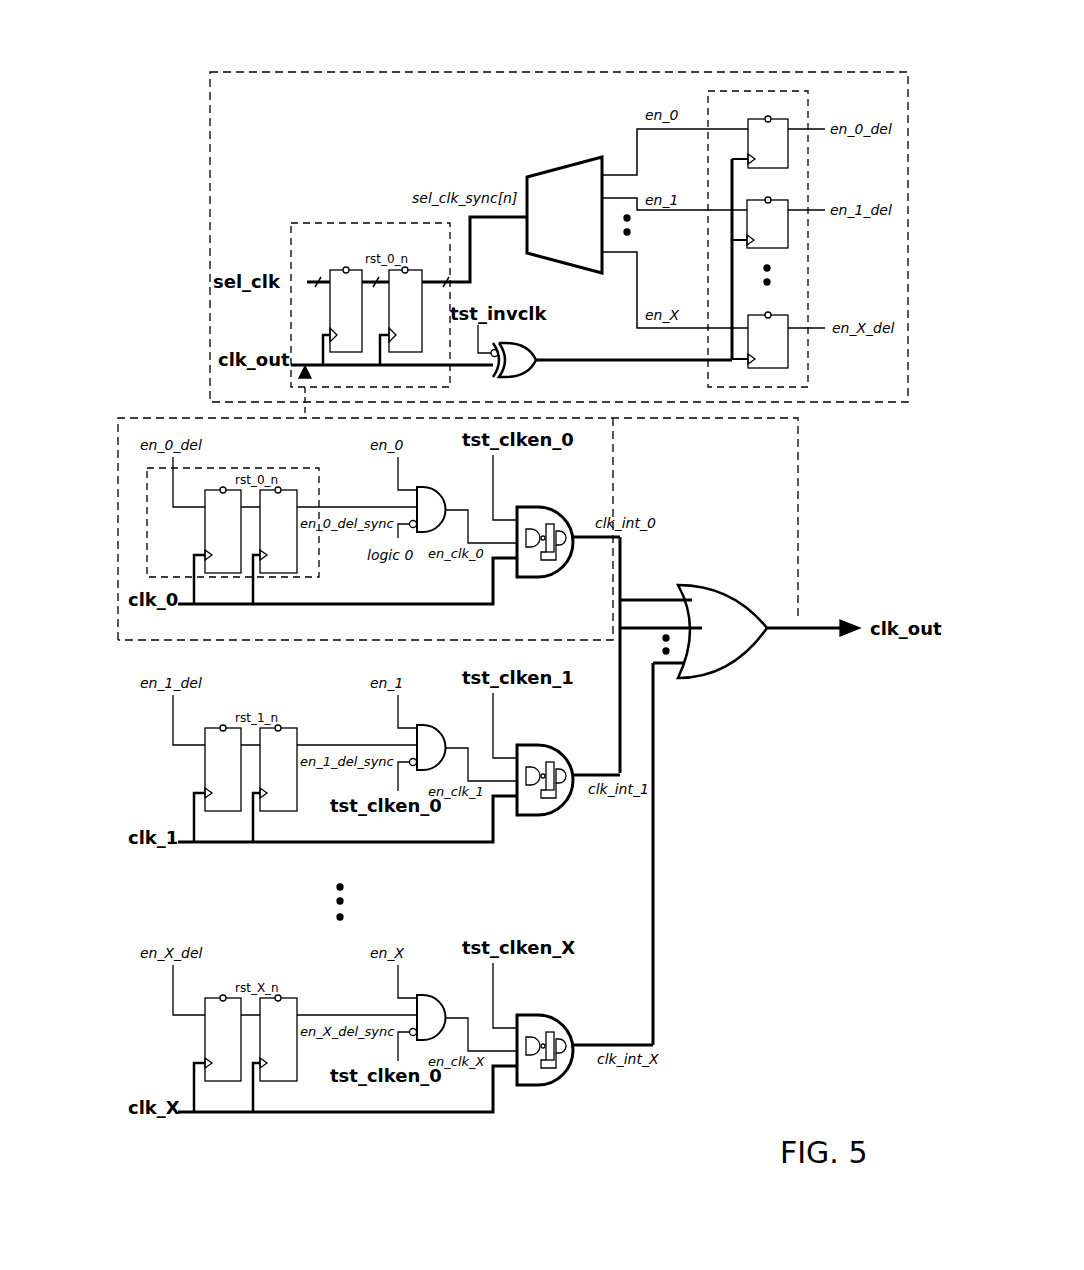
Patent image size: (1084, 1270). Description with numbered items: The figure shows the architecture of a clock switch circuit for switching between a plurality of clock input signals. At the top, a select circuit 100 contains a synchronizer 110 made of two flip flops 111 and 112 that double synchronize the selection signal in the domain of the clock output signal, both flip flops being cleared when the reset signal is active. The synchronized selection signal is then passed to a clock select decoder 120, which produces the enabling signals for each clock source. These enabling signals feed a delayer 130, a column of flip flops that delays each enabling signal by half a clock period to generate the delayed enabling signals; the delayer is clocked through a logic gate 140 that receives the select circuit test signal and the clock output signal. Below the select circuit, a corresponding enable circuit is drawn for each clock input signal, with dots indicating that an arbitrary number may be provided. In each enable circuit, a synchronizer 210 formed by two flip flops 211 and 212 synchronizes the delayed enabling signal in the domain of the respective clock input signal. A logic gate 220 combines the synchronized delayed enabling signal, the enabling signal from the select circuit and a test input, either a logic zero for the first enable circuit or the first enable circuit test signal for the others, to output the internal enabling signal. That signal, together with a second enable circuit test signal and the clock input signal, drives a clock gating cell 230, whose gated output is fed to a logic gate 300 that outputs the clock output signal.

The select circuit 100 is at (207, 100).
The synchronizer 110 is at (356, 220).
The flip flop 111 is at (334, 268).
The flip flop 112 is at (410, 268).
The decoder 120 is at (553, 172).
The delayer 130 is at (724, 84).
The logic gate 140 is at (528, 345).
The synchronizer 210 is at (247, 464).
The flip flop 211 is at (214, 490).
The flip flop 212 is at (280, 490).
The logic gate 220 is at (436, 487).
The clock gating cell 230 is at (552, 506).
The logic gate 300 is at (728, 588).